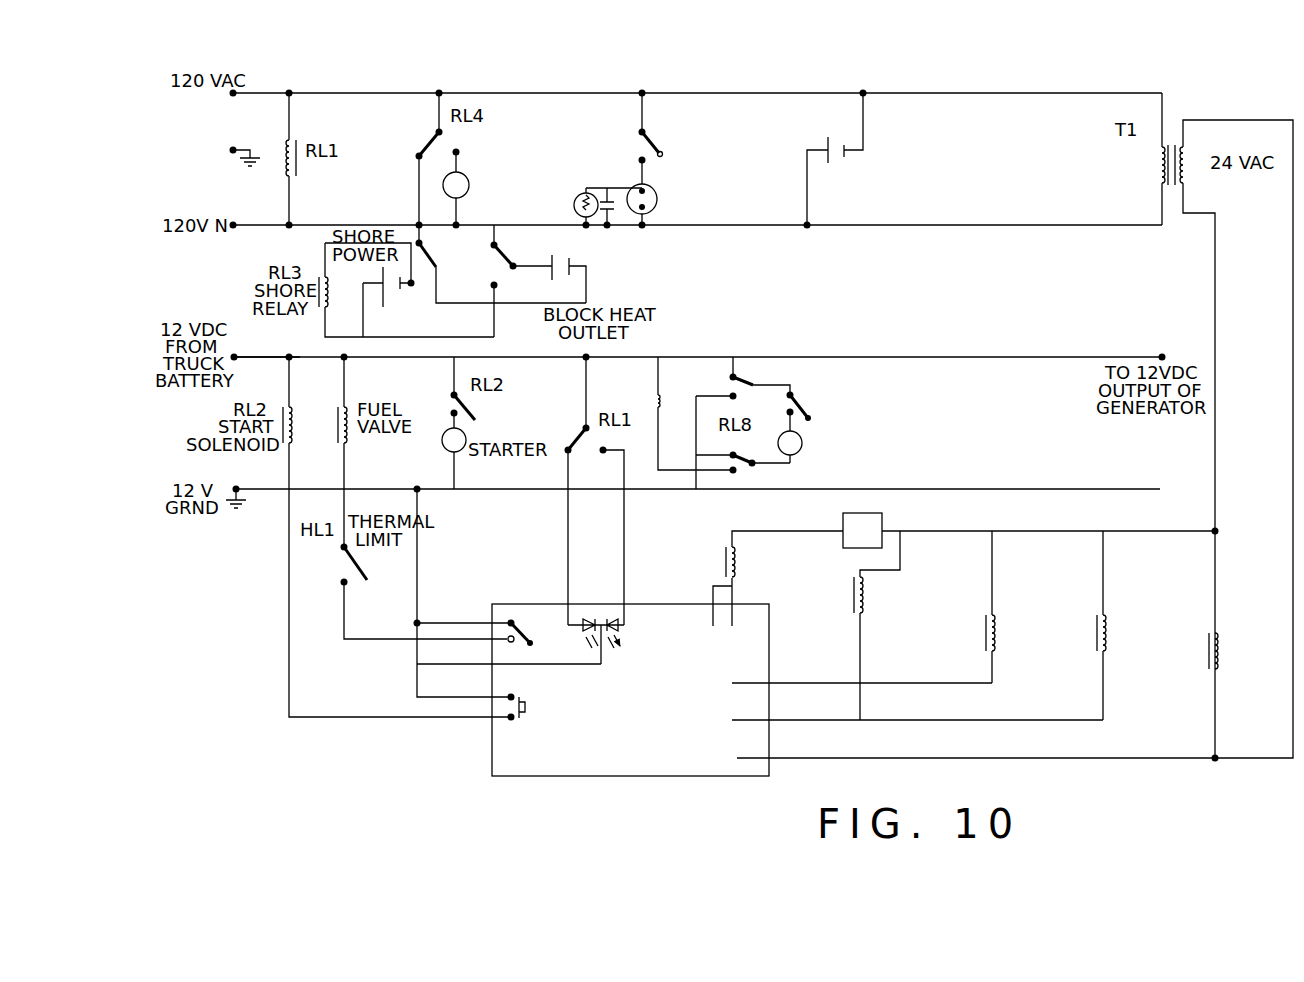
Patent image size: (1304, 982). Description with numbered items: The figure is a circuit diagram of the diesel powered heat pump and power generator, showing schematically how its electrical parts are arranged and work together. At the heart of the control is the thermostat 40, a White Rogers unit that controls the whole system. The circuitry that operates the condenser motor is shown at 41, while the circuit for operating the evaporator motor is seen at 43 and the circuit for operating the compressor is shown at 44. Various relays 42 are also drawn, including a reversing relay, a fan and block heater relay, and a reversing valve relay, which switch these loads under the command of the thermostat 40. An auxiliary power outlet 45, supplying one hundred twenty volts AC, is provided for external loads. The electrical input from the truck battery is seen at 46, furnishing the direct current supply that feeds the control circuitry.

The thermostat 40 is at (538, 762).
The condenser motor circuitry 41 is at (842, 422).
The relays 42 is at (1027, 527).
The evaporator motor circuit 43 is at (493, 152).
The compressor circuit 44 is at (693, 153).
The auxiliary power outlet 45 is at (887, 140).
The truck battery electrical input 46 is at (213, 395).